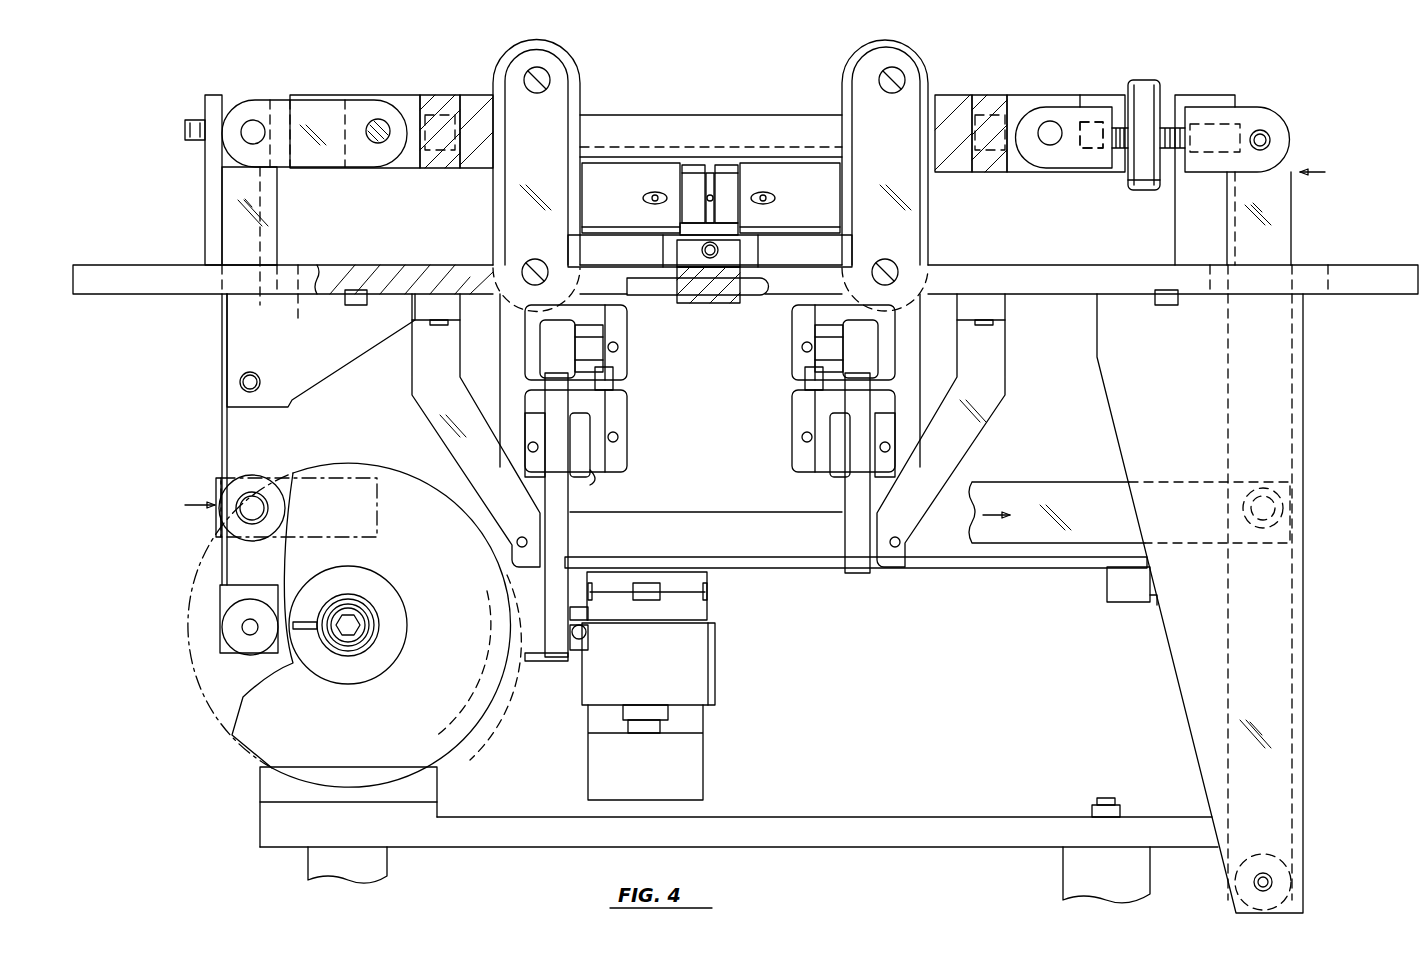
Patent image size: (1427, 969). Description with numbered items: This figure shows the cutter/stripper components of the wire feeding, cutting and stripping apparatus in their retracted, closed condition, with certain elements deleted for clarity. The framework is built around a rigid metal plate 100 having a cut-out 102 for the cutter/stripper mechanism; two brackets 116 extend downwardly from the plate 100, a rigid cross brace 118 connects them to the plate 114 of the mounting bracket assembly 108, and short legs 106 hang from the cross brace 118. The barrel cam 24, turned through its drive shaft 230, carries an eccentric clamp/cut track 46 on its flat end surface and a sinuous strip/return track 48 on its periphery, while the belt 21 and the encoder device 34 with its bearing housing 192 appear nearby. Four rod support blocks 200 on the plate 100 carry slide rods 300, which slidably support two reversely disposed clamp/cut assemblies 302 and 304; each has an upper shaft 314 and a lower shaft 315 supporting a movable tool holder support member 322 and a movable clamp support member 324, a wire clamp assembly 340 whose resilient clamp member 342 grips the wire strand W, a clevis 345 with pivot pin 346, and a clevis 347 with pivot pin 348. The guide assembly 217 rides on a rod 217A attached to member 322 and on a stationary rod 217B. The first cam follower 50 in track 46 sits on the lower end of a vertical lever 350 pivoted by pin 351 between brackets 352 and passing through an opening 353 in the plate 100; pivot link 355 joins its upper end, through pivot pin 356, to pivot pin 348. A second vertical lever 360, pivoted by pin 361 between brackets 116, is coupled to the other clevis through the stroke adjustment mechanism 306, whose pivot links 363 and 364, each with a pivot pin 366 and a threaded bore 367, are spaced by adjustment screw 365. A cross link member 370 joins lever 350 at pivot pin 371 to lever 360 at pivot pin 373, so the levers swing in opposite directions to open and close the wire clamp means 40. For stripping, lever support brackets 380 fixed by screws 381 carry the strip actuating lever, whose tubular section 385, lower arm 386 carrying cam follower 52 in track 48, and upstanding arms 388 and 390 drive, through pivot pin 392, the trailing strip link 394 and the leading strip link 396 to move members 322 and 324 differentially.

The rigid metal plate 100 is at (87, 265).
The cut-out 102 is at (470, 268).
The short legs 106 is at (385, 865).
The mounting bracket assembly 108 is at (258, 783).
The plate 114 is at (430, 802).
The brackets 116 is at (1175, 684).
The rigid cross brace 118 is at (765, 817).
The bearing housing 192 is at (707, 602).
The rod support blocks 200 is at (205, 97).
The endless flexible belt 21 is at (1037, 568).
The guide assembly 217 is at (737, 296).
The rod 217A is at (680, 298).
The stationary rod 217B is at (720, 250).
The drive shaft 230 is at (355, 615).
The barrel cam 24 is at (210, 728).
The slide rods 300 is at (660, 115).
The clamp/cut assembly 302 is at (430, 80).
The clamp/cut assembly 304 is at (985, 70).
The stroke adjustment mechanism 306 is at (462, 95).
The upper shaft 314 is at (546, 80).
The lower shaft 315 is at (535, 272).
The movable tool holder support member 322 is at (628, 410).
The movable clamp support member 324 is at (530, 47).
The encoder device 34 is at (715, 668).
The wire clamp assembly 340 is at (600, 163).
The cylindrical clamp member 342 is at (722, 173).
The clevis 345 is at (620, 375).
The pivot pin 346 is at (620, 386).
The clevis 347 is at (345, 95).
The pivot pin 348 is at (378, 131).
The vertical lever 350 is at (238, 218).
The pin 351 is at (240, 382).
The brackets 352 is at (230, 318).
The opening 353 is at (177, 266).
The pivot link 355 is at (297, 100).
The pivot pin 356 is at (253, 132).
The vertical lever 360 is at (1292, 230).
The pin 361 is at (1272, 882).
The pivot link 363 is at (1205, 107).
The pivot link 364 is at (1100, 107).
The adjustment screw 365 is at (1145, 80).
The pivot pin 366 is at (1050, 133).
The threaded bore 367 is at (1100, 150).
The cross link member 370 is at (215, 480).
The pivot pin 371 is at (235, 510).
The pivot pin 373 is at (1273, 506).
The lever support brackets 380 is at (412, 387).
The screws 381 is at (440, 322).
The tubular section 385 is at (820, 568).
The lower arm 386 is at (545, 660).
The arm 388 is at (560, 505).
The arm 390 is at (845, 493).
The pivot pin 392 is at (595, 470).
The trailing strip link 394 is at (540, 420).
The leading strip link 396 is at (555, 340).
The wire clamp means 40 is at (551, 52).
The eccentric clamp/cut track 46 is at (228, 658).
The sinuous strip/return track 48 is at (520, 713).
The first roller-type cam follower 50 is at (215, 600).
The second roller-type cam follower 52 is at (507, 685).
The insulated wire strand W is at (708, 173).